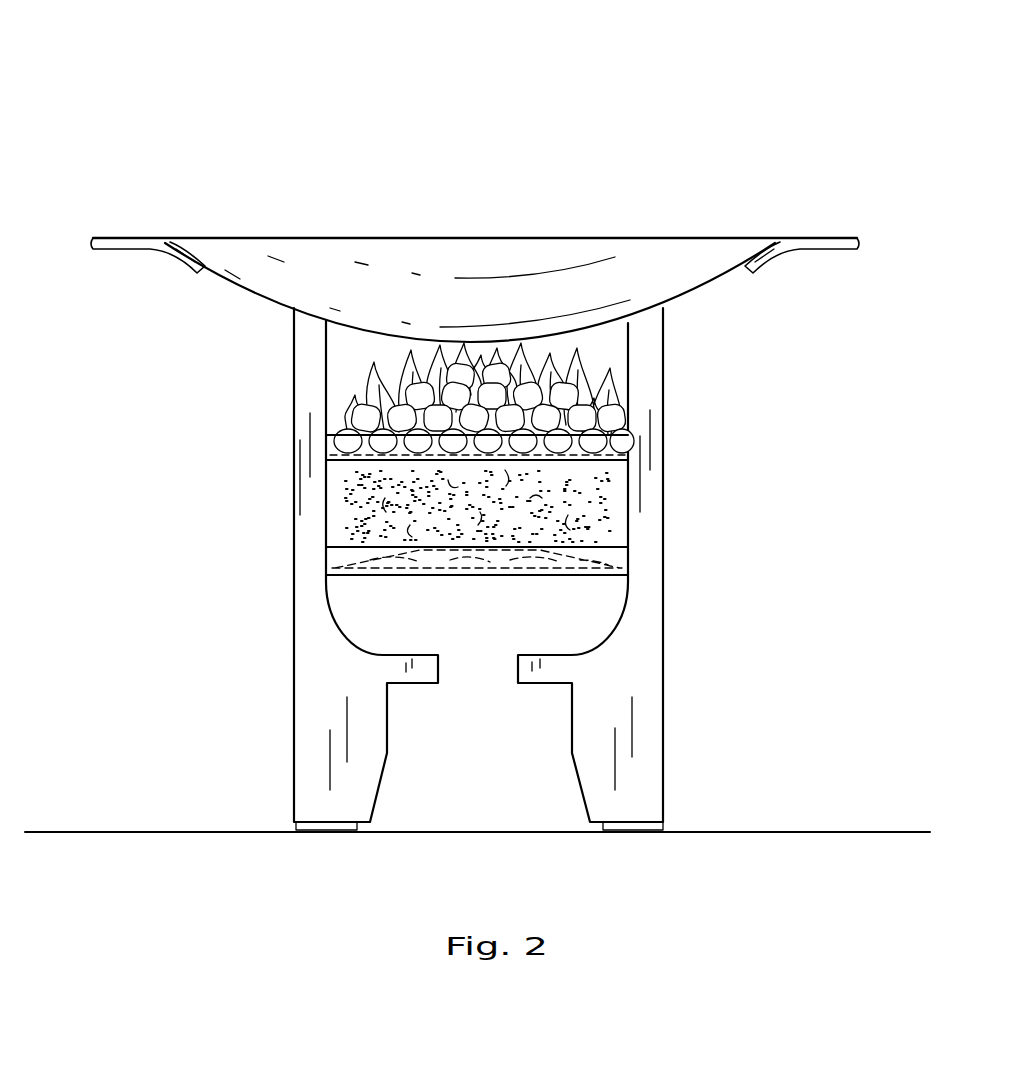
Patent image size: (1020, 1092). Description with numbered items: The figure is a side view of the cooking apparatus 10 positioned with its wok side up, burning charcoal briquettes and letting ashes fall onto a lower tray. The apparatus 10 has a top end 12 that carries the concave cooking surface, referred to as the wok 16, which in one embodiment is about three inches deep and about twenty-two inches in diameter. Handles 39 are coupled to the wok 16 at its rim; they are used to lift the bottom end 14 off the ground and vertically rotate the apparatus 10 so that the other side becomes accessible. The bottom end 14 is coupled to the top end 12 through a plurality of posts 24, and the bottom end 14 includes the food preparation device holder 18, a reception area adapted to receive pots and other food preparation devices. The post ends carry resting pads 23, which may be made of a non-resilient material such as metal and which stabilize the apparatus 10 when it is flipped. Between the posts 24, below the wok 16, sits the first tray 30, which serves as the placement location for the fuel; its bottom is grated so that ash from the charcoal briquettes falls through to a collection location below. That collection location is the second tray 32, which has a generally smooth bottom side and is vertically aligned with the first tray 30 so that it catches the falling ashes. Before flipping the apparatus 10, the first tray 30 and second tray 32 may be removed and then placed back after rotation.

The cooking apparatus 10 is at (246, 78).
The top end 12 is at (877, 222).
The bottom end 14 is at (677, 708).
The wok 16 is at (667, 238).
The food preparation device holder 18 is at (216, 680).
The resting pads 23 is at (748, 810).
The posts 24 is at (705, 662).
The first tray 30 is at (620, 443).
The second tray 32 is at (620, 557).
The handles 39 is at (838, 240).